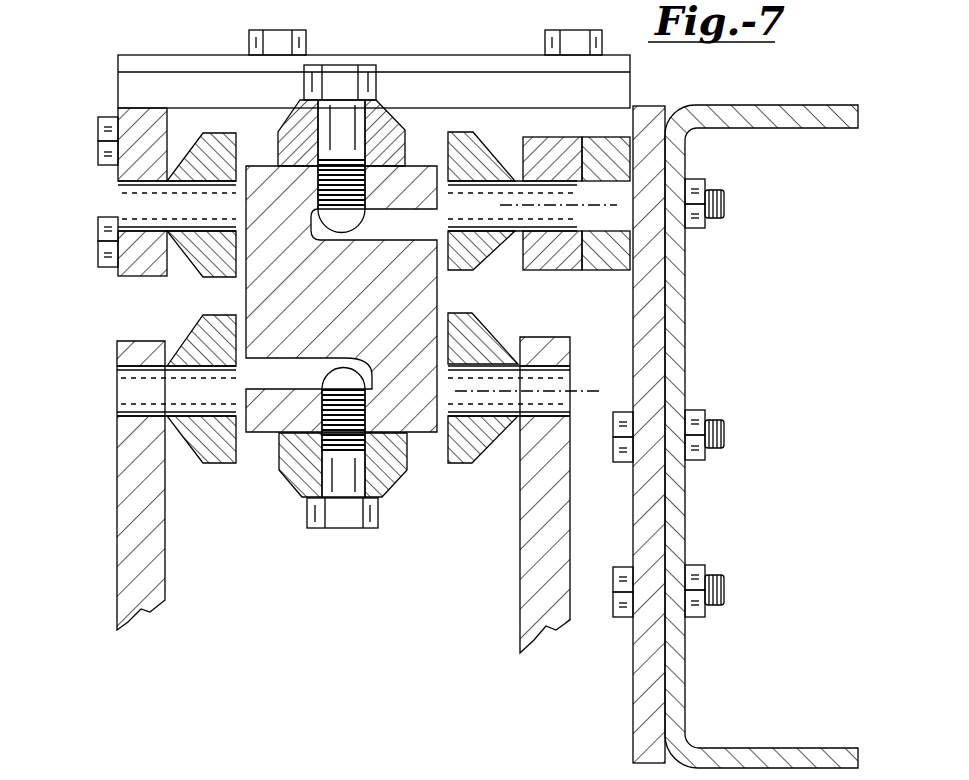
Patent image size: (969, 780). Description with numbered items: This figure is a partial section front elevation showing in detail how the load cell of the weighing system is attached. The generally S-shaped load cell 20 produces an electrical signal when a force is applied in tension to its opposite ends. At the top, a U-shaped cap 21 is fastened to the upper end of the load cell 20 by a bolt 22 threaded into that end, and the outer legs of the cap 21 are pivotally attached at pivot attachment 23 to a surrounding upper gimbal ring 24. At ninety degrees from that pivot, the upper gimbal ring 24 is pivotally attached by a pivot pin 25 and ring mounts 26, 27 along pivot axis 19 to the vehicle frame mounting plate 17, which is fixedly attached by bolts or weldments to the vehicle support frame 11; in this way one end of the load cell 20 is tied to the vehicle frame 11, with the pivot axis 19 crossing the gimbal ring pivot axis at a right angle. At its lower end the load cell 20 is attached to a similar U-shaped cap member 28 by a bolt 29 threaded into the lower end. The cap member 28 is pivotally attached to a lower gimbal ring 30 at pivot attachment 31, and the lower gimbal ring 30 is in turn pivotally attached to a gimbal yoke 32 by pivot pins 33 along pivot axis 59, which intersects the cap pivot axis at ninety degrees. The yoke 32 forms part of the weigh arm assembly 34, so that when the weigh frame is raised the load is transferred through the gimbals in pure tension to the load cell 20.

The vehicle support frame 11 is at (687, 690).
The vehicle frame mounting plate 17 is at (635, 661).
The pivot axis 19 is at (618, 203).
The load cell 20 is at (245, 303).
The U-shaped cap 21 is at (407, 118).
The bolt 22 is at (375, 87).
The pivot attachment 23 is at (358, 220).
The upper gimbal ring 24 is at (500, 150).
The pivot pin 25 is at (118, 202).
The ring mount 26 is at (613, 137).
The ring mount 27 is at (130, 108).
The U-shaped cap member 28 is at (395, 490).
The bolt 29 is at (317, 530).
The lower gimbal ring 30 is at (183, 347).
The pivot attachment 31 is at (330, 378).
The gimbal yoke 32 is at (117, 480).
The pivot pins 33 is at (117, 407).
The weigh arm assembly 34 is at (358, 779).
The pivot axis 59 is at (600, 388).